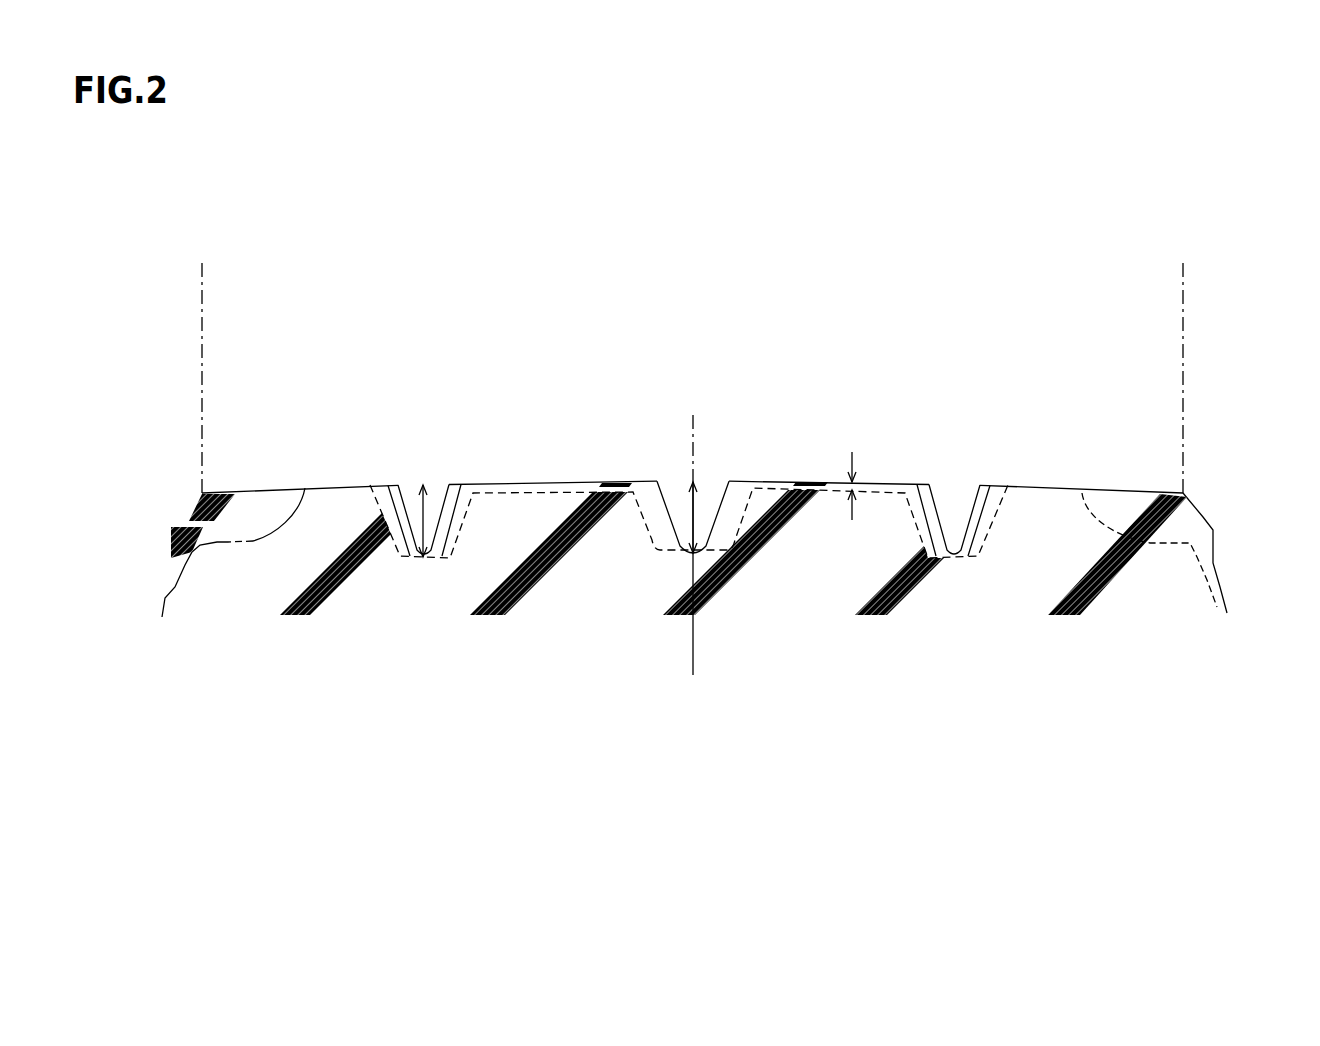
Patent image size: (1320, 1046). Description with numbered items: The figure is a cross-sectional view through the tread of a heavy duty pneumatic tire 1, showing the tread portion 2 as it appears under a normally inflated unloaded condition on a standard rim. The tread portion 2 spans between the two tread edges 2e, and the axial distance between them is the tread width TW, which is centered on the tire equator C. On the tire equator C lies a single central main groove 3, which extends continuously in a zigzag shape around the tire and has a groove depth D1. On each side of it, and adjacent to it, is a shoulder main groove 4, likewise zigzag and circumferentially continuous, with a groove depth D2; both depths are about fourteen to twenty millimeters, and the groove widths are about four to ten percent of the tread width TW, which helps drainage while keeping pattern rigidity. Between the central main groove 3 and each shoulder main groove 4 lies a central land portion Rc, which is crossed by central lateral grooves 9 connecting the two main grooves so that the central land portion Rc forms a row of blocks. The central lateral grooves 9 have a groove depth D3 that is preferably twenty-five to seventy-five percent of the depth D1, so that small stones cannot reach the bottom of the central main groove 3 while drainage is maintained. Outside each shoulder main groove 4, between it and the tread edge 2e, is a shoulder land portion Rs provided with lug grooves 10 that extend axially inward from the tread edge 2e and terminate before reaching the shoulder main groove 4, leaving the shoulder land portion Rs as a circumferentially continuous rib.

The heavy duty pneumatic tire 1 is at (1213, 340).
The tread portion 2 is at (752, 433).
The tread edge 2e is at (202, 493).
The central main groove 3 is at (681, 503).
The shoulder main groove 4 is at (412, 517).
The central lateral groove 9 is at (476, 492).
The lug groove 10 is at (227, 541).
The tread width TW is at (202, 263).
The shoulder land portion Rs is at (313, 479).
The central land portion Rc is at (600, 468).
The tire equator C is at (692, 531).
The groove depth of central main groove D1 is at (697, 517).
The groove depth of shoulder main groove D2 is at (428, 500).
The groove depth of central lateral grooves D3 is at (851, 491).